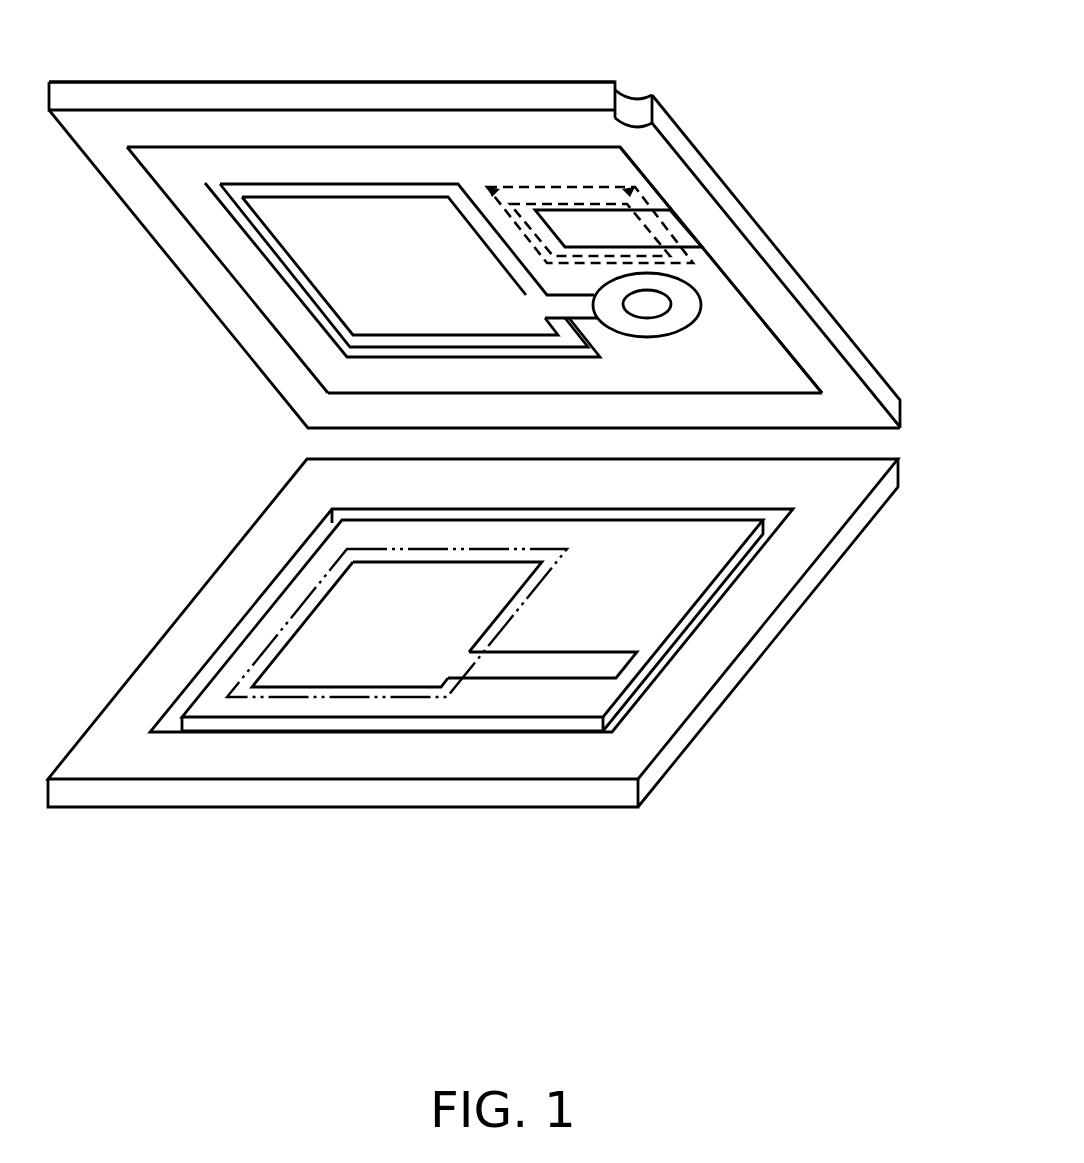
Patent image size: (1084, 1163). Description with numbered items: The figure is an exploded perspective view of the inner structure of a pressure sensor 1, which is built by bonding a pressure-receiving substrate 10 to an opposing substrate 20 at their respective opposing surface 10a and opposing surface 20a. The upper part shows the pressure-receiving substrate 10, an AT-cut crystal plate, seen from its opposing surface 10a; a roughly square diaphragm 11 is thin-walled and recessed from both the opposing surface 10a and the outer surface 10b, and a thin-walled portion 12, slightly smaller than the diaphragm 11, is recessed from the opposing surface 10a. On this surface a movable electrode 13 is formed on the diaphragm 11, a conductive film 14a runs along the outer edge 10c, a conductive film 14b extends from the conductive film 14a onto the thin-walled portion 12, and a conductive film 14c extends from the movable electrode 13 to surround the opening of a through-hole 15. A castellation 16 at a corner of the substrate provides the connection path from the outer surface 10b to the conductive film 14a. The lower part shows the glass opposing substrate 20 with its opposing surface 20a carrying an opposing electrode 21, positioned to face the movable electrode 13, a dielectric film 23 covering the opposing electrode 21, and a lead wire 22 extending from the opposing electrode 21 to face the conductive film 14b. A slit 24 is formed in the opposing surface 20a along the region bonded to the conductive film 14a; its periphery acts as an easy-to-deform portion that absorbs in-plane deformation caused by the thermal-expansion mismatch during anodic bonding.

The pressure sensor 1 is at (727, 64).
The pressure-receiving substrate 10 is at (876, 343).
The opposing surface 10a is at (690, 373).
The outer surface 10b is at (350, 80).
The outer edge 10c is at (227, 97).
The diaphragm 11 is at (512, 338).
The thin-walled portion 12 is at (505, 212).
The movable electrode 13 is at (425, 273).
The conductive film 14a is at (750, 274).
The conductive film 14b is at (578, 243).
The conductive film 14c is at (692, 310).
The through-hole 15 is at (640, 311).
The castellation 16 is at (630, 104).
The opposing substrate 20 is at (846, 618).
The opposing surface 20a is at (807, 538).
The opposing electrode 21 is at (425, 578).
The lead wire 22 is at (563, 667).
The dielectric film 23 is at (557, 562).
The slit 24 is at (618, 513).